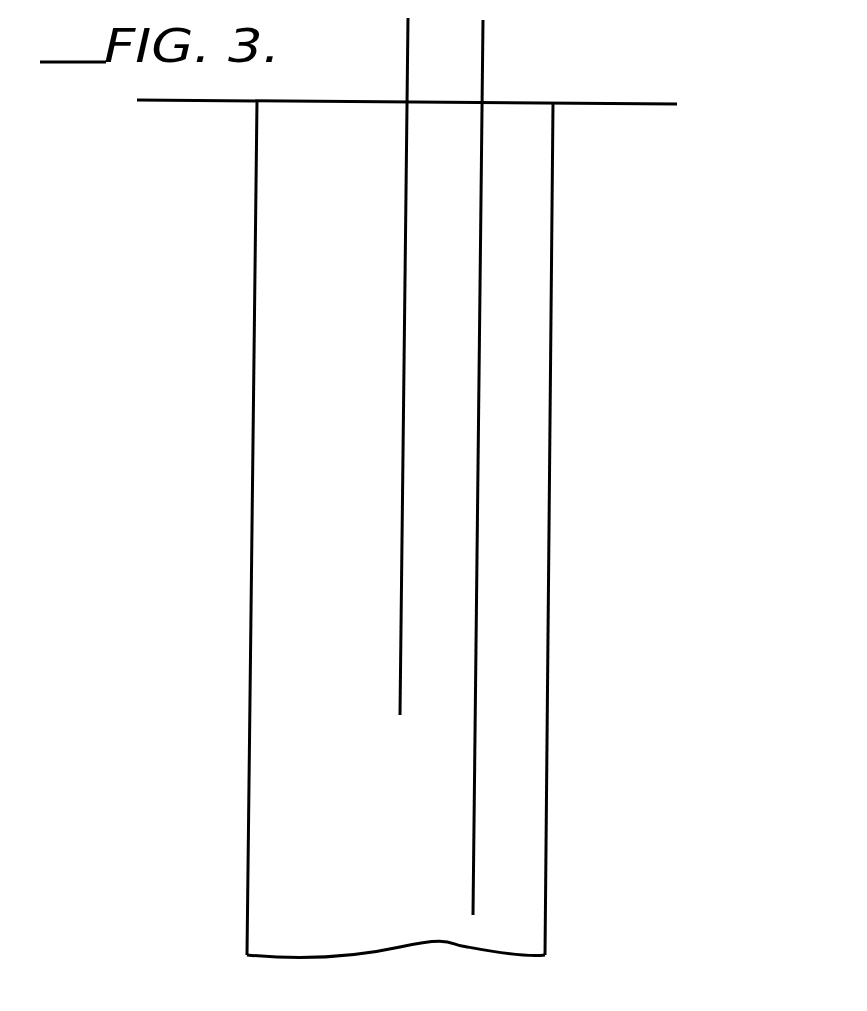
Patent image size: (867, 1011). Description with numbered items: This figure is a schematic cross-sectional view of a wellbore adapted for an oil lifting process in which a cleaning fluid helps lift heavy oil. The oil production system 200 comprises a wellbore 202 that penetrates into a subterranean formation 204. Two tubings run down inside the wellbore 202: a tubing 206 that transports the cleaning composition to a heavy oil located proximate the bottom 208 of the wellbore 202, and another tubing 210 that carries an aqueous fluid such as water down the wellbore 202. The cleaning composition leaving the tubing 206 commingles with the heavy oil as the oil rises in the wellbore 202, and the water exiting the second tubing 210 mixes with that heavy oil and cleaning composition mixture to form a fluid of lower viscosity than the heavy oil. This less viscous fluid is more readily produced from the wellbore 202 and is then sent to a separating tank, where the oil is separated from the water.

The oil production system 200 is at (612, 163).
The wellbore 202 is at (553, 438).
The subterranean formation 204 is at (198, 260).
The tubing 206 is at (476, 795).
The bottom 208 is at (247, 857).
The tubing 210 is at (402, 469).